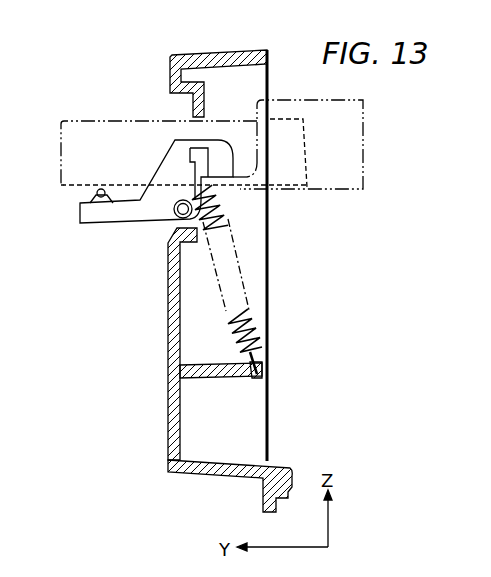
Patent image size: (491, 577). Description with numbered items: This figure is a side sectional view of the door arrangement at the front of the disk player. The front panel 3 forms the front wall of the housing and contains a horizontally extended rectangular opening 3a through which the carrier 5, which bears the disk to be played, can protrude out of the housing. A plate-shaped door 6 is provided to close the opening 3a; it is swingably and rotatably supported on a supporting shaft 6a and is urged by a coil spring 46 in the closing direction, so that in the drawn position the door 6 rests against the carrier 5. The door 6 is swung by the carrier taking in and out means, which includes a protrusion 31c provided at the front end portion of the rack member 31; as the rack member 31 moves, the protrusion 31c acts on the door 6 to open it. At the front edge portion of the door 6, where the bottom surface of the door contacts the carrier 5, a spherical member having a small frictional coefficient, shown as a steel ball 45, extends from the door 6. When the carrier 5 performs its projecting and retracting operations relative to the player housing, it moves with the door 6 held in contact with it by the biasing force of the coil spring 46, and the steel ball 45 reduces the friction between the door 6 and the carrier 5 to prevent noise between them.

The front panel 3 is at (168, 463).
The opening 3a is at (200, 112).
The carrier 5 is at (57, 121).
The door 6 is at (84, 226).
The supporting shaft 6a is at (173, 212).
The rack member 31 is at (355, 128).
The protrusion 31c is at (237, 190).
The steel ball 45 is at (88, 191).
The coil spring 46 is at (250, 313).